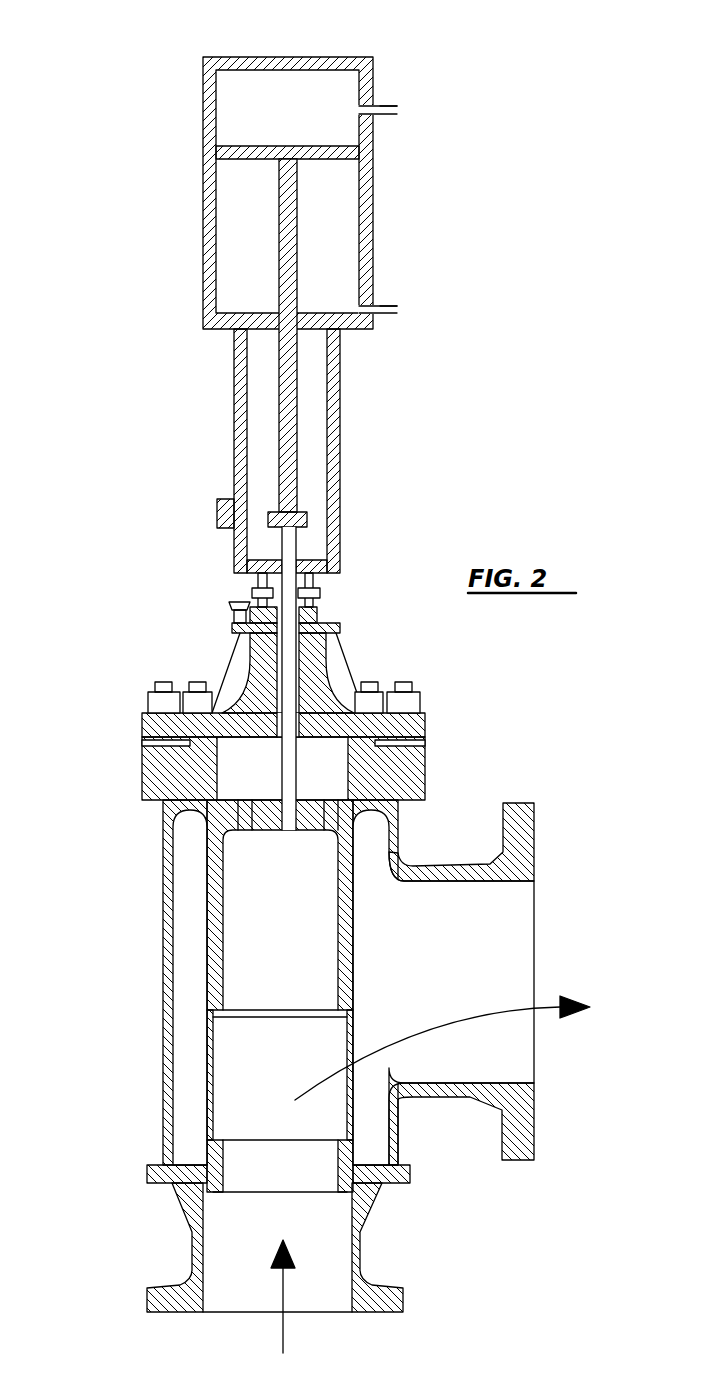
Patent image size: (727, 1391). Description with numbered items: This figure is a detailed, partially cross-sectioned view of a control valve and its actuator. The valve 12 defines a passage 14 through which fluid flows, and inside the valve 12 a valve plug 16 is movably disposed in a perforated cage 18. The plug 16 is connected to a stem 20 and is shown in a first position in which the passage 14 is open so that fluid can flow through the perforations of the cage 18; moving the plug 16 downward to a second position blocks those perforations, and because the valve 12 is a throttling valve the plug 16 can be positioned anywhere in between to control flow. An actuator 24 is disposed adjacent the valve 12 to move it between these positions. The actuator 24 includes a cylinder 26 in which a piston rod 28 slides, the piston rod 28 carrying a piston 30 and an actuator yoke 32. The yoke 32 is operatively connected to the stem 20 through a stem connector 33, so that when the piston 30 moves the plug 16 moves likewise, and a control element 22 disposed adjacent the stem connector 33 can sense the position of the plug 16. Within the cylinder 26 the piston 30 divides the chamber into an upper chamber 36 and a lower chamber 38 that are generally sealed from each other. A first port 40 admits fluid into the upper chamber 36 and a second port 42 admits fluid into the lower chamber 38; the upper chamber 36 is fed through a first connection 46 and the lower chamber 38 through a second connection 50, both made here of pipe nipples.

The valve 12 is at (132, 770).
The passage 14 is at (283, 1330).
The valve plug 16 is at (233, 955).
The cage 18 is at (207, 1058).
The stem 20 is at (272, 778).
The control element 22 is at (217, 510).
The actuator 24 is at (295, 258).
The cylinder 26 is at (203, 253).
The piston rod 28 is at (280, 363).
The piston 30 is at (248, 158).
The actuator yoke 32 is at (234, 415).
The stem connector 33 is at (307, 520).
The upper chamber 36 is at (265, 90).
The lower chamber 38 is at (352, 308).
The first port 40 is at (372, 117).
The second port 42 is at (365, 313).
The first connection 46 is at (385, 104).
The second connection 50 is at (385, 305).